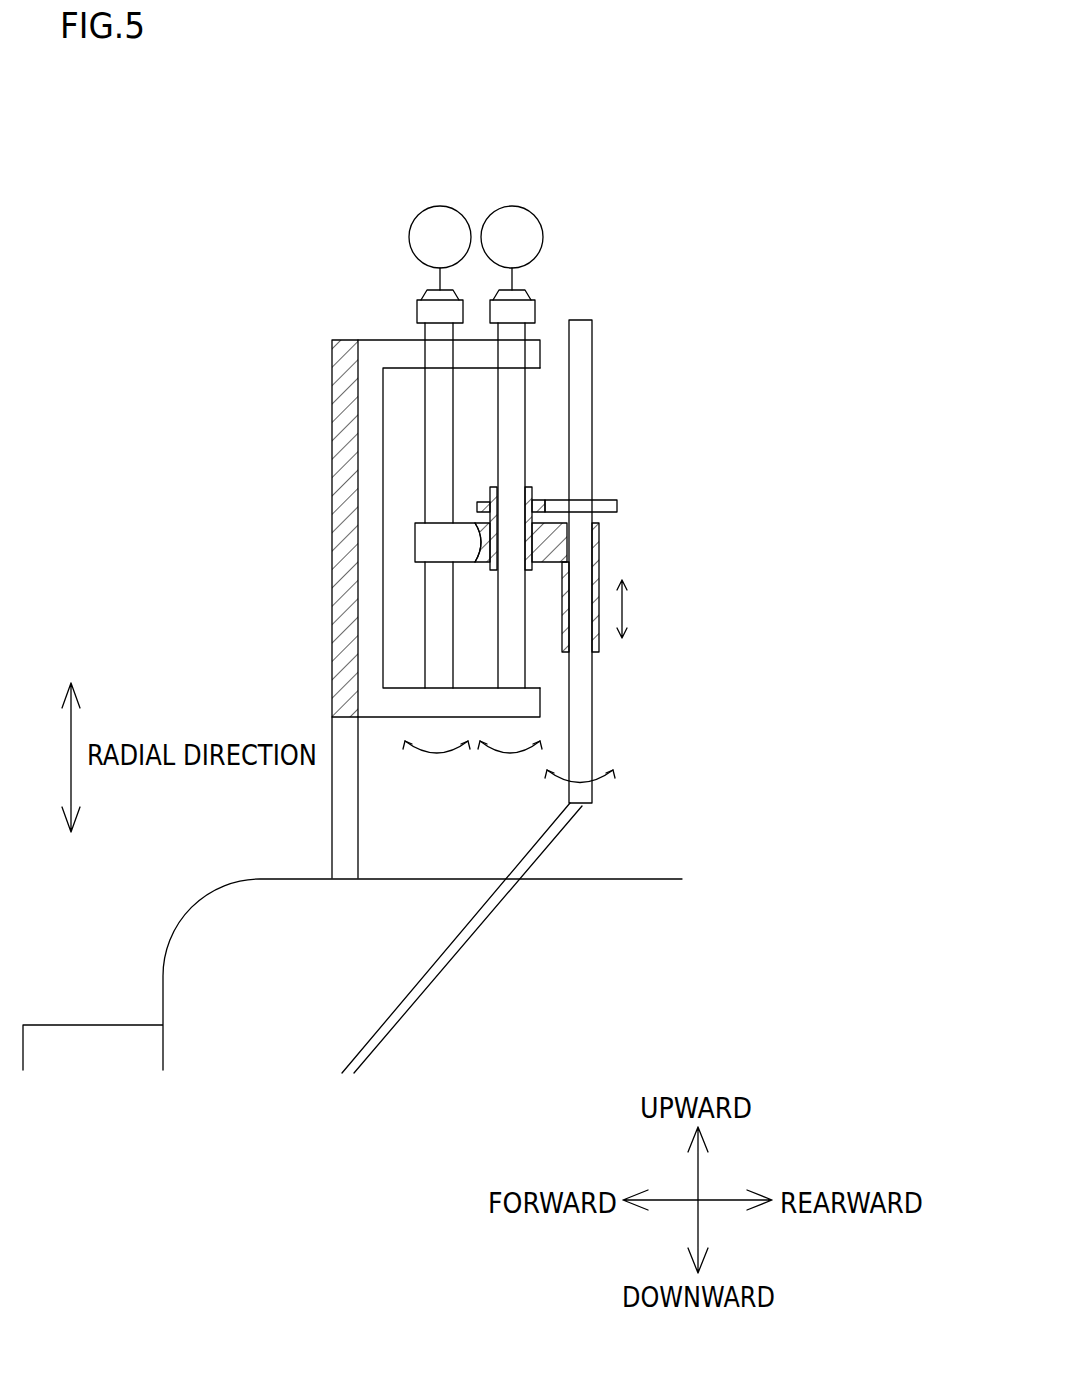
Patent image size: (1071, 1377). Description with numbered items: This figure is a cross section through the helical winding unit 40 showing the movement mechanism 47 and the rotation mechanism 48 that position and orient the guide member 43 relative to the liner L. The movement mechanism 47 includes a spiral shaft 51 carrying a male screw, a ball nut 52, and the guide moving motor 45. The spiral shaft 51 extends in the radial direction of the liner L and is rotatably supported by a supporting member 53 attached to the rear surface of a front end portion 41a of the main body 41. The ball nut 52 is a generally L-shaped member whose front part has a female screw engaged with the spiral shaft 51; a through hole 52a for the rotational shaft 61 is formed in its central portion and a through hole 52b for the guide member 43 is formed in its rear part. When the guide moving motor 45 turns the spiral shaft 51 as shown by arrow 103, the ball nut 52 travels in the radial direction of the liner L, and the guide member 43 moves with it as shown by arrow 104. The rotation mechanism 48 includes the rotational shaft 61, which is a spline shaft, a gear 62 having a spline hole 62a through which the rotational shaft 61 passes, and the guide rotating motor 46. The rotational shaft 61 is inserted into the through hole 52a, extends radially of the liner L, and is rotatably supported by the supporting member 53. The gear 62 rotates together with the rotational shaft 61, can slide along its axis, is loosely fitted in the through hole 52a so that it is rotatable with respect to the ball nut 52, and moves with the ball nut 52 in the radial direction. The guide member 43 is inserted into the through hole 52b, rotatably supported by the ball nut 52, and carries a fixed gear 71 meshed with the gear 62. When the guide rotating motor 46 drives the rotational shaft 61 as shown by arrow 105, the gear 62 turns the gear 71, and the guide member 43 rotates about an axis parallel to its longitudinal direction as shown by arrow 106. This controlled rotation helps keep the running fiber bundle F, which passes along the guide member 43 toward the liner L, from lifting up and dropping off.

The helical winding unit 40 is at (157, 228).
The main body 41 is at (313, 345).
The front end portion 41a is at (345, 385).
The guide member 43 is at (585, 737).
The guide moving motor 45 is at (440, 206).
The guide rotating motor 46 is at (512, 206).
The movement mechanism 47 is at (387, 235).
The rotation mechanism 48 is at (567, 270).
The spiral shaft 51 is at (438, 433).
The ball nut 52 is at (440, 548).
The through hole 52a is at (485, 548).
The through hole 52b is at (593, 645).
The supporting member 53 is at (368, 595).
The rotational shaft 61 is at (513, 402).
The gear 62 is at (477, 500).
The spline hole 62a is at (540, 507).
The gear 71 is at (617, 500).
The arrow 103 is at (437, 757).
The arrow 104 is at (627, 607).
The arrow 105 is at (510, 757).
The arrow 106 is at (578, 787).
The liner L is at (200, 905).
The fiber bundle F is at (480, 923).